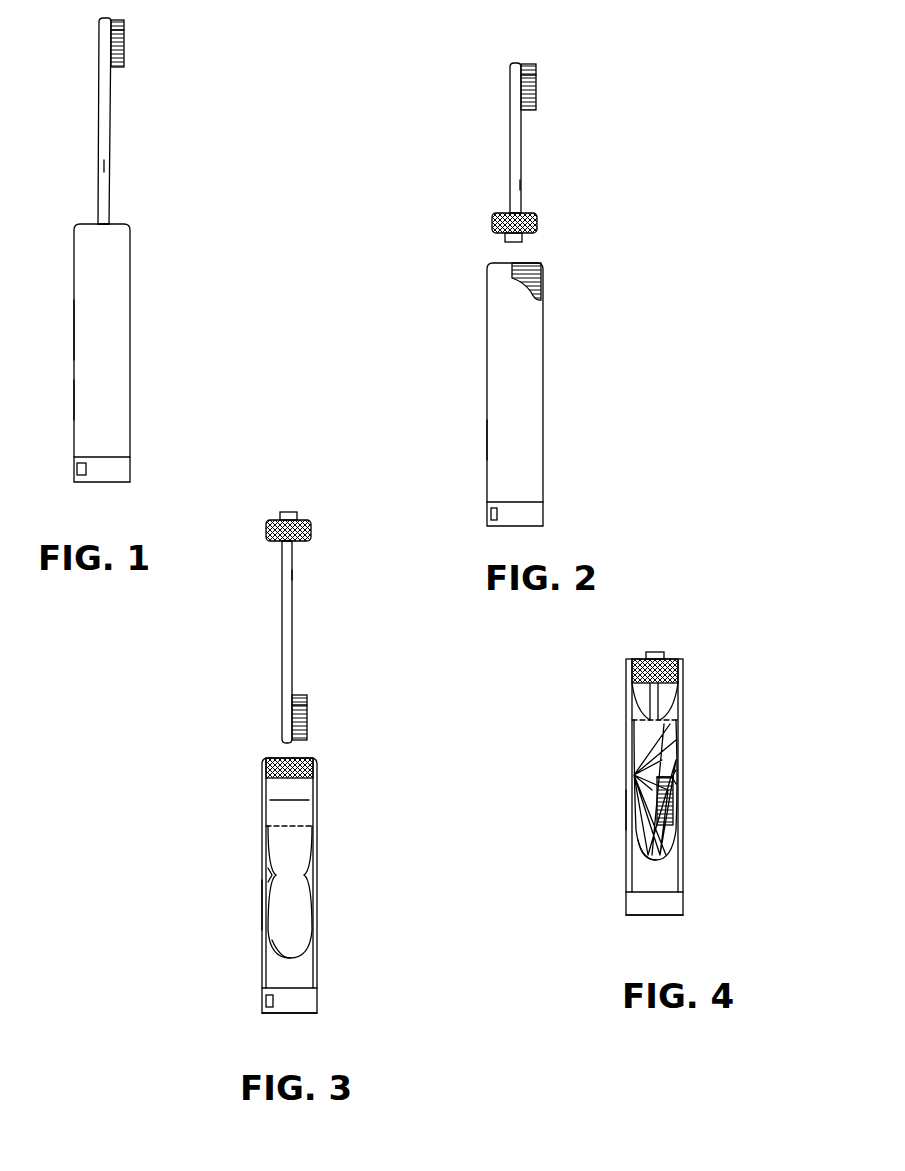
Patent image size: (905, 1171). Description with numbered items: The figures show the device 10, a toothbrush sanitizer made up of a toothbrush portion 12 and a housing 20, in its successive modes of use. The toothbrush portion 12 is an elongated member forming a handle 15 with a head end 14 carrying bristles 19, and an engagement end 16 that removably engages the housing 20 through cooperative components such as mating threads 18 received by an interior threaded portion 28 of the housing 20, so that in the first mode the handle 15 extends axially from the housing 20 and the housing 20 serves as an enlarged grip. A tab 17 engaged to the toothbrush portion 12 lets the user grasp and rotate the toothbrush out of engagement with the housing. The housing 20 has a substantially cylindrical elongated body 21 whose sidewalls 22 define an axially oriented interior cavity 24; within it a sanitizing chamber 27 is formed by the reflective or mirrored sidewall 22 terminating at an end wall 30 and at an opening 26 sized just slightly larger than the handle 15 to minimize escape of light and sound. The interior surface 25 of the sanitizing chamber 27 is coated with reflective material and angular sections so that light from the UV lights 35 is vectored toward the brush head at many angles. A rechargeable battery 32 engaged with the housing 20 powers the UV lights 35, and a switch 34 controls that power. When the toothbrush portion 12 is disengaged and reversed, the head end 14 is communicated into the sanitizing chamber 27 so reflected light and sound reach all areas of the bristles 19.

In FIG. 1, the device 10 is at (214, 127).
In FIG. 2, the device 10 is at (655, 137).
In FIG. 3, the device 10 is at (163, 797).
In FIG. 4, the device 10 is at (711, 571).
In FIG. 1, the toothbrush portion 12 is at (98, 112).
In FIG. 2, the toothbrush portion 12 is at (510, 160).
In FIG. 3, the toothbrush portion 12 is at (290, 620).
In FIG. 4, the toothbrush portion 12 is at (648, 765).
In FIG. 1, the head end 14 is at (124, 60).
In FIG. 2, the head end 14 is at (510, 95).
In FIG. 3, the head end 14 is at (290, 720).
In FIG. 4, the head end 14 is at (676, 840).
In FIG. 1, the handle 15 is at (105, 166).
In FIG. 2, the handle 15 is at (522, 185).
In FIG. 3, the handle 15 is at (293, 575).
In FIG. 1, the engagement end 16 is at (108, 217).
In FIG. 2, the engagement end 16 is at (521, 213).
In FIG. 3, the engagement end 16 is at (282, 545).
In FIG. 2, the tab 17 is at (522, 238).
In FIG. 3, the tab 17 is at (288, 512).
In FIG. 4, the tab 17 is at (653, 650).
In FIG. 2, the mating threads 18 is at (492, 225).
In FIG. 3, the mating threads 18 is at (312, 528).
In FIG. 4, the mating threads 18 is at (683, 668).
In FIG. 1, the bristles 19 is at (118, 65).
In FIG. 2, the bristles 19 is at (537, 82).
In FIG. 3, the bristles 19 is at (308, 705).
In FIG. 1, the housing 20 is at (126, 352).
In FIG. 2, the housing 20 is at (545, 395).
In FIG. 3, the housing 20 is at (295, 805).
In FIG. 4, the housing 20 is at (626, 720).
In FIG. 1, the elongated body 21 is at (74, 333).
In FIG. 1, the sidewall 22 is at (84, 394).
In FIG. 2, the sidewall 22 is at (487, 438).
In FIG. 3, the sidewall 22 is at (266, 902).
In FIG. 4, the sidewall 22 is at (630, 812).
In FIG. 3, the interior cavity 24 is at (298, 917).
In FIG. 4, the interior cavity 24 is at (672, 742).
In FIG. 3, the interior surface 25 is at (266, 826).
In FIG. 4, the interior surface 25 is at (675, 805).
In FIG. 3, the opening 26 is at (287, 822).
In FIG. 4, the opening 26 is at (660, 720).
In FIG. 3, the sanitizing chamber 27 is at (294, 942).
In FIG. 4, the sanitizing chamber 27 is at (640, 835).
In FIG. 2, the interior threaded portion 28 is at (541, 270).
In FIG. 3, the interior threaded portion 28 is at (308, 760).
In FIG. 3, the end wall 30 is at (288, 988).
In FIG. 4, the end wall 30 is at (643, 892).
In FIG. 1, the rechargeable battery 32 is at (128, 472).
In FIG. 2, the rechargeable battery 32 is at (545, 512).
In FIG. 3, the rechargeable battery 32 is at (315, 1003).
In FIG. 4, the rechargeable battery 32 is at (626, 912).
In FIG. 1, the switch 34 is at (78, 472).
In FIG. 2, the switch 34 is at (490, 514).
In FIG. 3, the switch 34 is at (262, 1008).
In FIG. 3, the UV lights 35 is at (270, 875).
In FIG. 4, the UV lights 35 is at (678, 778).